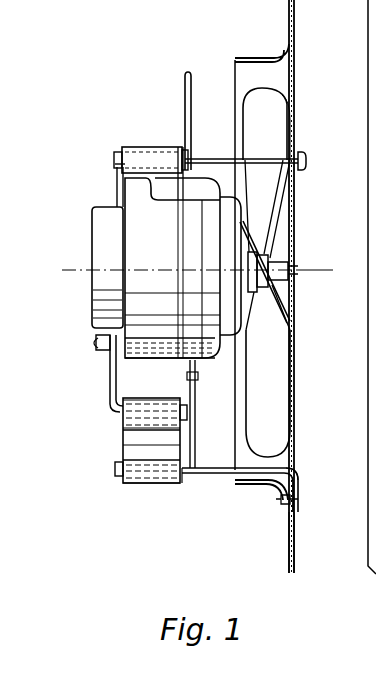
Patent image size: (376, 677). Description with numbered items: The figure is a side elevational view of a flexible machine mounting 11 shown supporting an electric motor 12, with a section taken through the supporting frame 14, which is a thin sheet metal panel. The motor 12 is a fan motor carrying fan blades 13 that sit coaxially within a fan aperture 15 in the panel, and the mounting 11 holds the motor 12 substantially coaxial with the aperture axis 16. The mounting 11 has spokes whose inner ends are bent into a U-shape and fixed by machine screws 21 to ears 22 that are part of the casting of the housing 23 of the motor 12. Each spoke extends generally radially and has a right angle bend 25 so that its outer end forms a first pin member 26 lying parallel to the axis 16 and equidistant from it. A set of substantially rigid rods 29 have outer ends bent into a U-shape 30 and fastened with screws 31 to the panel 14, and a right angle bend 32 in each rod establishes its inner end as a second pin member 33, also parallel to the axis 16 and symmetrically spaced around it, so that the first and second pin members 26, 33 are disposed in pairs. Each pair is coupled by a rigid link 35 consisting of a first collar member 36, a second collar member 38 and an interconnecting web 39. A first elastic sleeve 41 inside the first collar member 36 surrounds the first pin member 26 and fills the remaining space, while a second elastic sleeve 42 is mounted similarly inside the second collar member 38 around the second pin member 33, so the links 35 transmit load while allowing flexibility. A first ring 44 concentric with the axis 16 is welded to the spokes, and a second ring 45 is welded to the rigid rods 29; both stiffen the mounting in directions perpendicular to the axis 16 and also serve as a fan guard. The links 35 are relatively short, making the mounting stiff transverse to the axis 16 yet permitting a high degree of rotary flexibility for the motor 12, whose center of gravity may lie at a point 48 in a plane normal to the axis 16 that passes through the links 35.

The flexible machine mounting 11 is at (91, 394).
The electric motor 12 is at (162, 255).
The fan blades 13 is at (278, 113).
The supporting frame 14 is at (295, 36).
The fan aperture 15 is at (291, 216).
The axis 16 is at (311, 270).
The machine screws 21 is at (95, 345).
The ears 22 is at (140, 155).
The housing 23 is at (176, 160).
The right angle bend 25 is at (110, 400).
The first pin member 26 is at (193, 412).
The rigid rods 29 is at (289, 468).
The U-shape 30 is at (296, 520).
The screws 31 is at (300, 500).
The right angle bend 32 is at (300, 478).
The second pin member 33 is at (208, 474).
The rigid link 35 is at (135, 455).
The first collar member 36 is at (151, 406).
The second collar member 38 is at (148, 485).
The interconnecting web 39 is at (130, 445).
The first elastic sleeve 41 is at (124, 420).
The second elastic sleeve 42 is at (185, 484).
The first ring 44 is at (116, 188).
The second ring 45 is at (185, 88).
The center of gravity point 48 is at (186, 268).